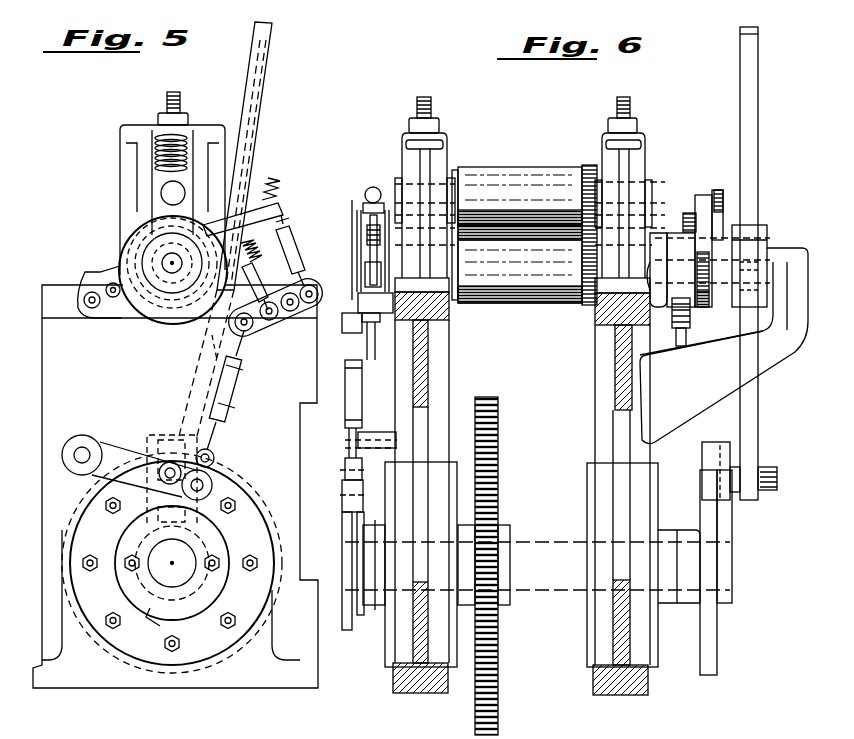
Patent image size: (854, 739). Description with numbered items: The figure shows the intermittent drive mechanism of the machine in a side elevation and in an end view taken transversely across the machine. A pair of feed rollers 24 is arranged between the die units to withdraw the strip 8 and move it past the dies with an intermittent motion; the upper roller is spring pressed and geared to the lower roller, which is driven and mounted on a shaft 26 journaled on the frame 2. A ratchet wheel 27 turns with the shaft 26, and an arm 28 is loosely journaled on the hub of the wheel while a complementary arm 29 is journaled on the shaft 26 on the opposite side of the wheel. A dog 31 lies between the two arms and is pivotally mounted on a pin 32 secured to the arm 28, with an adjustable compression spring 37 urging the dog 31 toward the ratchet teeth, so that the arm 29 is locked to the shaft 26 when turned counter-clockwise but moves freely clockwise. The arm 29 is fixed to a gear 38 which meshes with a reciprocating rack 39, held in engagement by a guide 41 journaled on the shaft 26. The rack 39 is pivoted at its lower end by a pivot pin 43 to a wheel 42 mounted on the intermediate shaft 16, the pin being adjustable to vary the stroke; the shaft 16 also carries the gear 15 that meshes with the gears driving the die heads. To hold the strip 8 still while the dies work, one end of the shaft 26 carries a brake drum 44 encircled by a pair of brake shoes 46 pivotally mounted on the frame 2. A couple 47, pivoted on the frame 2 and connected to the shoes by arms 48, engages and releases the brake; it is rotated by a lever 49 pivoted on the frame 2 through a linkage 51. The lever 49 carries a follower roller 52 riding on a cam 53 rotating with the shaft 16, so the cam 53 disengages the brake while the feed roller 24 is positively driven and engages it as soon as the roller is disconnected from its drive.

In FIG. 5, the frame 2 is at (115, 398).
In FIG. 6, the frame 2 is at (447, 352).
In FIG. 5, the strip 8 is at (195, 728).
In FIG. 6, the gear 15 is at (499, 418).
In FIG. 5, the intermediate shaft 16 is at (165, 565).
In FIG. 6, the intermediate shaft 16 is at (536, 555).
In FIG. 5, the feed rollers 24 is at (143, 215).
In FIG. 6, the feed rollers 24 is at (531, 185).
In FIG. 5, the shaft 26 is at (172, 273).
In FIG. 6, the shaft 26 is at (666, 252).
In FIG. 6, the ratchet wheel 27 is at (693, 312).
In FIG. 6, the arm 28 is at (690, 213).
In FIG. 5, the complementary arm 29 is at (177, 715).
In FIG. 6, the complementary arm 29 is at (717, 190).
In FIG. 5, the dog 31 is at (145, 722).
In FIG. 6, the dog 31 is at (701, 193).
In FIG. 6, the pin 32 is at (703, 224).
In FIG. 6, the adjustable compression spring 37 is at (665, 222).
In FIG. 5, the gear 38 is at (102, 313).
In FIG. 6, the gear 38 is at (765, 242).
In FIG. 5, the rack 39 is at (244, 148).
In FIG. 6, the rack 39 is at (758, 108).
In FIG. 5, the guide 41 is at (219, 350).
In FIG. 6, the guide 41 is at (746, 328).
In FIG. 5, the wheel 42 is at (92, 492).
In FIG. 6, the wheel 42 is at (706, 478).
In FIG. 5, the pivot pin 43 is at (168, 455).
In FIG. 6, the pivot pin 43 is at (770, 478).
In FIG. 5, the brake drum 44 is at (125, 252).
In FIG. 6, the brake drum 44 is at (356, 228).
In FIG. 5, the brake shoes 46 is at (118, 240).
In FIG. 6, the brake shoes 46 is at (367, 200).
In FIG. 5, the couple 47 is at (266, 328).
In FIG. 6, the couple 47 is at (360, 312).
In FIG. 5, the arms 48 is at (295, 234).
In FIG. 6, the arms 48 is at (368, 250).
In FIG. 5, the lever 49 is at (118, 450).
In FIG. 6, the lever 49 is at (373, 440).
In FIG. 5, the linkage 51 is at (239, 384).
In FIG. 6, the linkage 51 is at (360, 395).
In FIG. 5, the follower roller 52 is at (220, 478).
In FIG. 6, the follower roller 52 is at (345, 483).
In FIG. 5, the cam 53 is at (220, 522).
In FIG. 6, the cam 53 is at (346, 606).